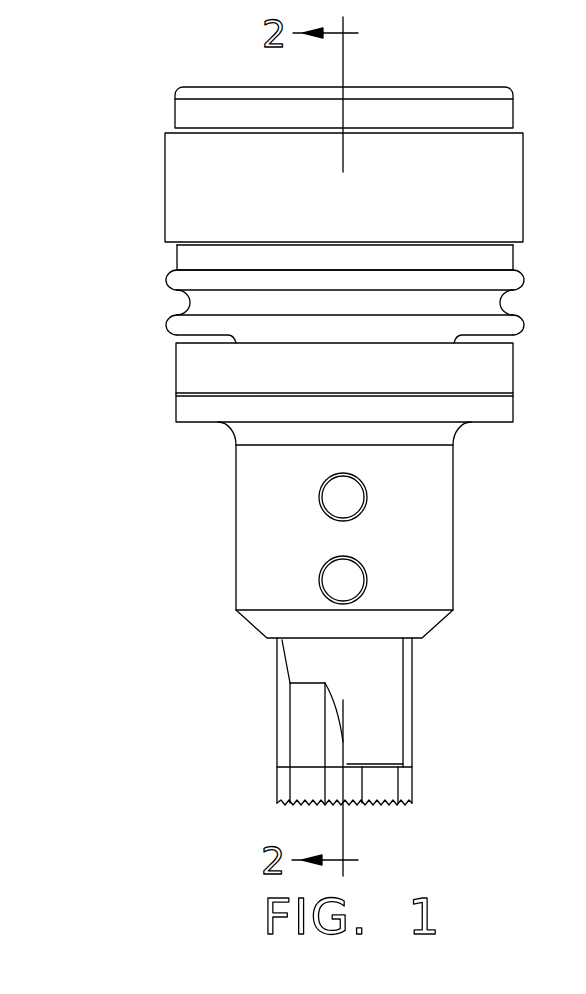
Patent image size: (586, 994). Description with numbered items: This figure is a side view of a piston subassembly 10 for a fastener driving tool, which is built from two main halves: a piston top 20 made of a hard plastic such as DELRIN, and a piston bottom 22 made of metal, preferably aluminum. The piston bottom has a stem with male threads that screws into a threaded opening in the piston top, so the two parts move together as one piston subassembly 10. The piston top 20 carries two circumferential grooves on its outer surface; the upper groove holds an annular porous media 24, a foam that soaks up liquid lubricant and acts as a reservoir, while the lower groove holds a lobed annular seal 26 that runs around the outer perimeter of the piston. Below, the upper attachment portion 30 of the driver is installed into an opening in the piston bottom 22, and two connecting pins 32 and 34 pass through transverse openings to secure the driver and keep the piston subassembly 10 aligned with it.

The piston subassembly 10 is at (136, 90).
The piston top 20 is at (500, 108).
The piston bottom 22 is at (493, 405).
The annular-shaped porous media 24 is at (511, 176).
The annular seal 26 is at (507, 281).
The upper attachment portion 30 is at (385, 692).
The connecting pin 32 is at (357, 497).
The connecting pin 34 is at (357, 578).